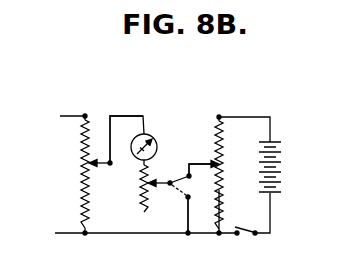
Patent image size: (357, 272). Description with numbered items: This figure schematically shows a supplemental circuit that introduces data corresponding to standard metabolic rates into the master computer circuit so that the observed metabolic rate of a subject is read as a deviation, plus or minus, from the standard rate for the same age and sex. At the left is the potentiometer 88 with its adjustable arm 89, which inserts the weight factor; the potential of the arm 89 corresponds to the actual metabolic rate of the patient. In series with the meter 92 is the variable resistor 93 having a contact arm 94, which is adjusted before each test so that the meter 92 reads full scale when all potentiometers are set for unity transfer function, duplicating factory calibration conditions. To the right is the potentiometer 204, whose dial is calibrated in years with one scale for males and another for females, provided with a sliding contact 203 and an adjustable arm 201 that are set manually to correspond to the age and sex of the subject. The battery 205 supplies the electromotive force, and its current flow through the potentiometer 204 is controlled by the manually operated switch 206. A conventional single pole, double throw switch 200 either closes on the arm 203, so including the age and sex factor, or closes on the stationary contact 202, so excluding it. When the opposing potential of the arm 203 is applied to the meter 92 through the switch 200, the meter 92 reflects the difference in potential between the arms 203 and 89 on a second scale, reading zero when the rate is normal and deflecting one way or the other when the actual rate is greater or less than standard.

The potentiometer 88 is at (80, 174).
The adjustable arm 89 is at (105, 158).
The meter 92 is at (151, 135).
The variable resistor 93 is at (124, 154).
The contact arm 94 is at (156, 196).
The single pole, double throw switch 200 is at (182, 175).
The adjustable arm 201 is at (185, 172).
The stationary contact 202 is at (192, 202).
The sliding contact 203 is at (201, 158).
The potentiometer 204 is at (222, 208).
The battery 205 is at (283, 152).
The manually operated switch 206 is at (248, 238).